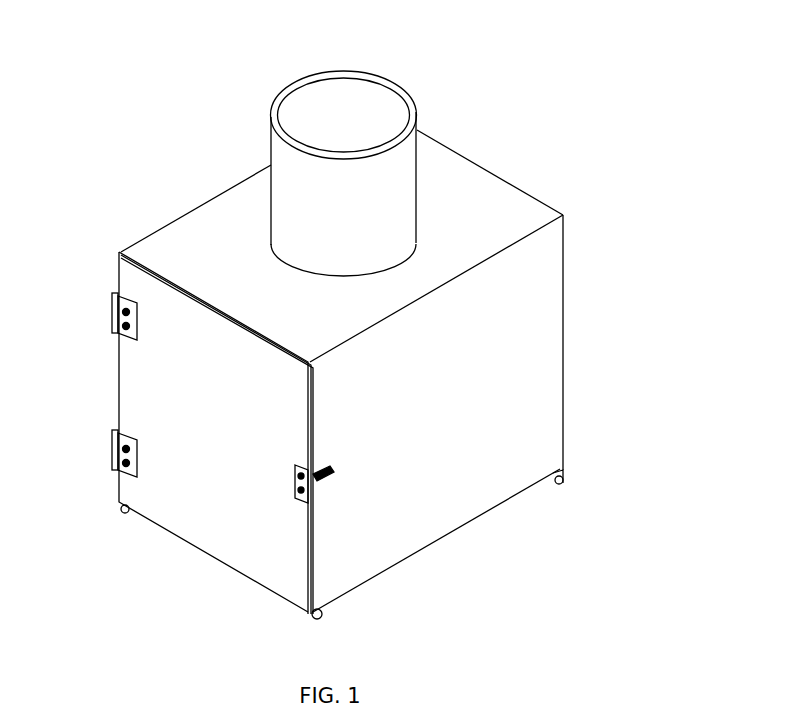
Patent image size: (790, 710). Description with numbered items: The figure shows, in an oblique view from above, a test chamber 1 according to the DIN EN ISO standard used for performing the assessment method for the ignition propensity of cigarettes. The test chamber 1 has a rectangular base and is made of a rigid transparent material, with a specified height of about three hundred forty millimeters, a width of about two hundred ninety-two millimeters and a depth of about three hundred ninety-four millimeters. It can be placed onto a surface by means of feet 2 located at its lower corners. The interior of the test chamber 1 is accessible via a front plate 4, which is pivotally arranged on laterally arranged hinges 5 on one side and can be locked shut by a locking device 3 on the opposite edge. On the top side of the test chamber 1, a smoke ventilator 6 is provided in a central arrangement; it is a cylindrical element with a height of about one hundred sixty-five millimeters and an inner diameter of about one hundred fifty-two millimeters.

The test chamber 1 is at (538, 193).
The feet 2 is at (562, 487).
The locking device 3 is at (317, 487).
The front plate 4 is at (202, 512).
The hinges 5 is at (108, 327).
The smoke ventilator 6 is at (395, 185).